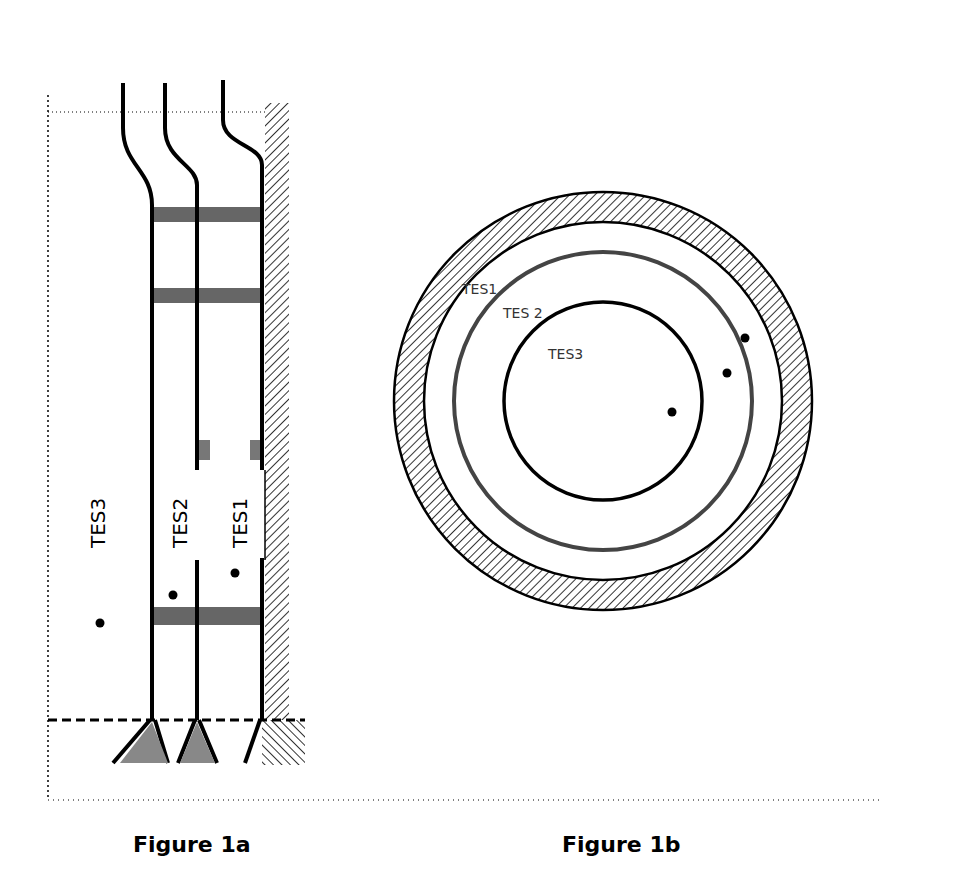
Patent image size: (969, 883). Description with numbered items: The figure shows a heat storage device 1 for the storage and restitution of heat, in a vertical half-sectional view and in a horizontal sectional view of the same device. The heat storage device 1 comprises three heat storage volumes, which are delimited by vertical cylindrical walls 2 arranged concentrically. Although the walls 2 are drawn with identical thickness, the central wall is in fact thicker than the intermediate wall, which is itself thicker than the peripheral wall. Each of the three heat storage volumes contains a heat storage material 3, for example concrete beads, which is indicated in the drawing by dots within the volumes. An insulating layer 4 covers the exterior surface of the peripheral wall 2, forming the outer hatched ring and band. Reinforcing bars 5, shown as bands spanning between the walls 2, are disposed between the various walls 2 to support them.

In FIG. 1A, the heat storage device 1 is at (358, 197).
In FIG. 1A, the vertical cylindrical walls 2 is at (152, 205).
In FIG. 1B, the vertical cylindrical walls 2 is at (607, 300).
In FIG. 1A, the heat storage material 3 is at (100, 623).
In FIG. 1B, the heat storage material 3 is at (672, 412).
In FIG. 1A, the insulating layer 4 is at (273, 520).
In FIG. 1B, the insulating layer 4 is at (428, 513).
In FIG. 1A, the reinforcing bars 5 is at (213, 296).